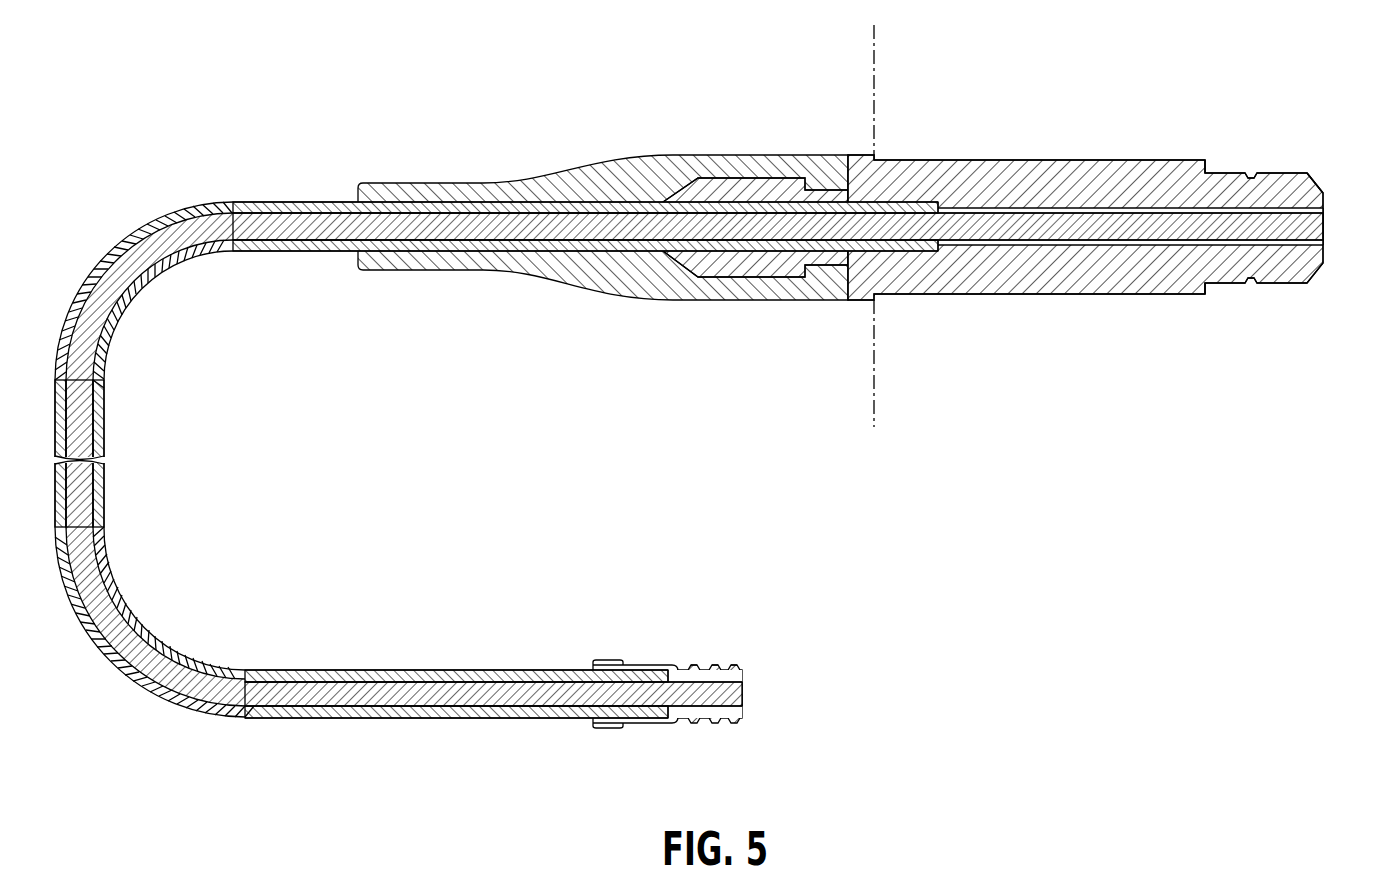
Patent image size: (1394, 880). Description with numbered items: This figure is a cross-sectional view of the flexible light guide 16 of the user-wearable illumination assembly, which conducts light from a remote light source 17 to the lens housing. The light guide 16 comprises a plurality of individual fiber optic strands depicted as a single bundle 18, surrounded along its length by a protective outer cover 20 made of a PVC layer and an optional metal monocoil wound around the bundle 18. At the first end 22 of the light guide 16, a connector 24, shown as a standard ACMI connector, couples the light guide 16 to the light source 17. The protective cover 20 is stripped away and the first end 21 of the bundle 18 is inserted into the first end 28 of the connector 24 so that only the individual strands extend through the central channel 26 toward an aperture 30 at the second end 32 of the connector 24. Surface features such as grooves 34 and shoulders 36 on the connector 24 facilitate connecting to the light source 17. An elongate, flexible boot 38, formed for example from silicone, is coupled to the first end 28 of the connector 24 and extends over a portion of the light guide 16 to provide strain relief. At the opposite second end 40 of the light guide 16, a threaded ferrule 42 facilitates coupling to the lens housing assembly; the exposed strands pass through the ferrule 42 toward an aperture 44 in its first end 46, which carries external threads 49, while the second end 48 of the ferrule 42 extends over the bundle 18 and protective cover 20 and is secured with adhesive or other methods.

The light guide 16 is at (160, 229).
The light source 17 is at (873, 93).
The bundle 18 is at (93, 500).
The protective outer cover 20 is at (716, 418).
The first end of the bundle 21 is at (1042, 214).
The first end of the light guide 22 is at (869, 200).
The connector 24 is at (953, 160).
The central channel 26 is at (1160, 242).
The first end of the connector 28 is at (660, 188).
The aperture 30 is at (1326, 228).
The second end of the connector 32 is at (1327, 195).
The grooves 34 is at (1255, 286).
The shoulders 36 is at (1208, 170).
The boot 38 is at (590, 163).
The second end of the light guide 40 is at (673, 704).
The threaded ferrule 42 is at (640, 665).
The aperture 44 is at (744, 695).
The first end of the ferrule 46 is at (740, 681).
The second end of the ferrule 48 is at (593, 664).
The external threads 49 is at (700, 667).